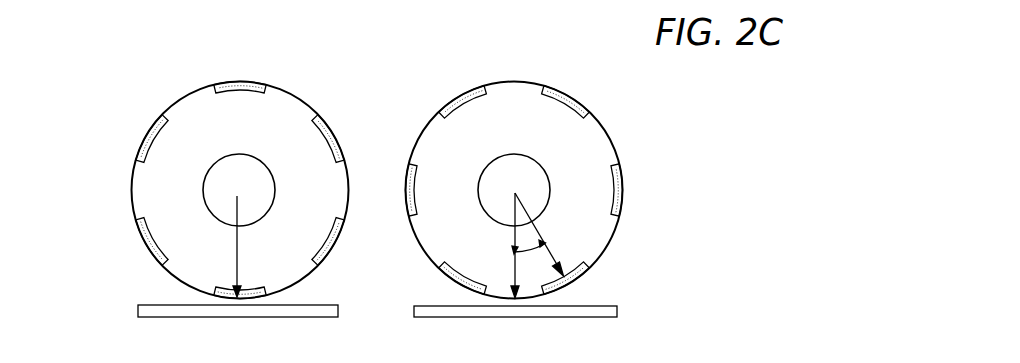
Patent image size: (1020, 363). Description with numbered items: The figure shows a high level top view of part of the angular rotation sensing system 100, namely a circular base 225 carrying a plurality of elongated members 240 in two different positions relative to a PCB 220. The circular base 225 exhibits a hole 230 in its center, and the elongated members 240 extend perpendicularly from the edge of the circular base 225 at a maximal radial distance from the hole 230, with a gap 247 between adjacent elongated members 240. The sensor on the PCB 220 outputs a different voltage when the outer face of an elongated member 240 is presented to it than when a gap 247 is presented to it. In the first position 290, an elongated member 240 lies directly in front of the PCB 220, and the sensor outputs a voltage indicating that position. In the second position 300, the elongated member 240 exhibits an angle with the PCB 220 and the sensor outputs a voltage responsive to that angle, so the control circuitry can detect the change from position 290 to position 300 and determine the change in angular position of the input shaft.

The angular rotation sensing system 100 is at (138, 305).
The PCB 220 is at (617, 311).
The circular base 225 is at (610, 135).
The hole 230 is at (212, 187).
The elongated members 240 is at (208, 288).
The gap 247 is at (187, 93).
The first position 290 is at (88, 42).
The second position 300 is at (477, 42).